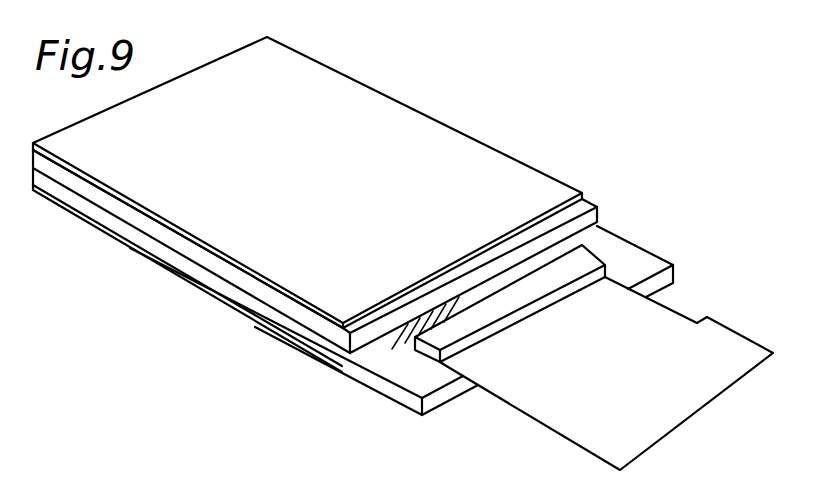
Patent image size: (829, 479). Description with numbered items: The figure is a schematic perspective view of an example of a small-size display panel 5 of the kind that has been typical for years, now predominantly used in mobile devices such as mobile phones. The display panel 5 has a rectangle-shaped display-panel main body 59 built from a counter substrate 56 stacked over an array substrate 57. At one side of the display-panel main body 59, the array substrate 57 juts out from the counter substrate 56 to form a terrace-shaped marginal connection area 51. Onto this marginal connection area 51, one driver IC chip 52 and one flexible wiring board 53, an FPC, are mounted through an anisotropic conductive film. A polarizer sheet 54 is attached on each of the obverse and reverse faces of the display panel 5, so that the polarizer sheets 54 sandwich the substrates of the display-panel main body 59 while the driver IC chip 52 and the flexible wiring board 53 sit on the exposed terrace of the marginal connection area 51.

The display panel 5 is at (624, 160).
The marginal connection area 51 is at (630, 263).
The driver IC chip 52 is at (413, 345).
The flexible wiring board (FPC) 53 is at (540, 380).
The polarizer sheet 54 is at (282, 295).
The counter substrate 56 is at (177, 243).
The array substrate 57 is at (210, 278).
The display-panel main body 59 is at (89, 287).